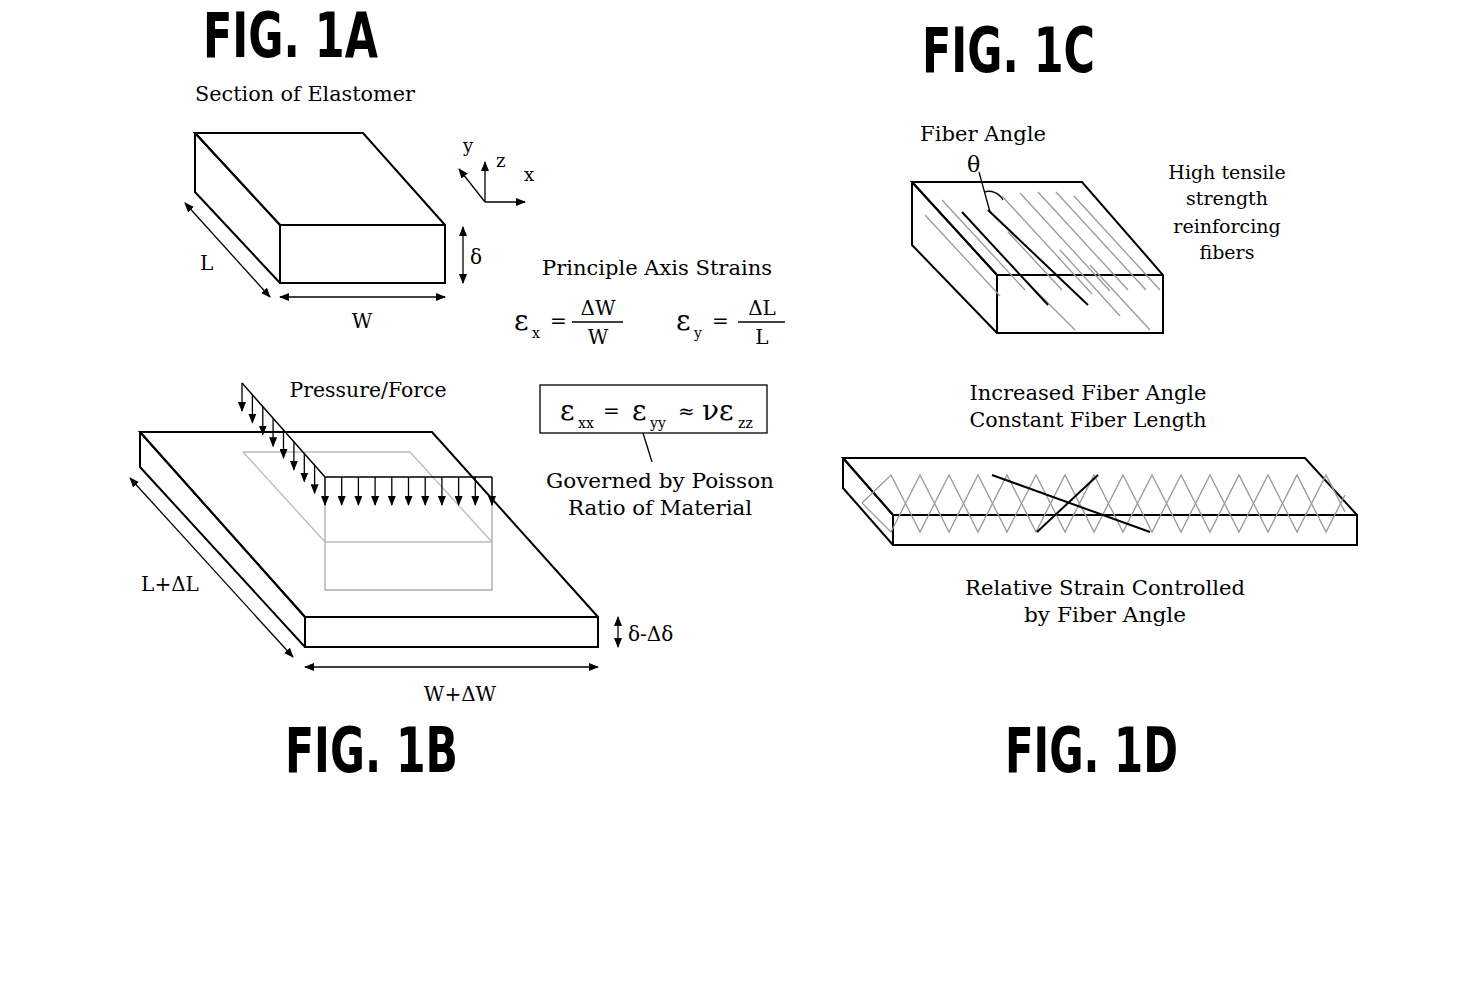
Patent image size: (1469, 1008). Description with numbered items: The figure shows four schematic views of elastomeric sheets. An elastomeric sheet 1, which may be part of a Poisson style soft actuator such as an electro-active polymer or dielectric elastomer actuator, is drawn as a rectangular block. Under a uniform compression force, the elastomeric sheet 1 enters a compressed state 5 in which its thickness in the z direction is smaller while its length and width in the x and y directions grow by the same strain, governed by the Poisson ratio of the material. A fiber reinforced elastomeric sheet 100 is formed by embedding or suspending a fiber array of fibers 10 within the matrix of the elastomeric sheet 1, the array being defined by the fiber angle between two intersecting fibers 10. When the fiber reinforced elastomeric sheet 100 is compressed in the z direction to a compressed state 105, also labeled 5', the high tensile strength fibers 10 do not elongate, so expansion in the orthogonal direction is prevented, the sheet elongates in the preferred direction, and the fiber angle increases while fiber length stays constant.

In FIG. 1A, the elastomeric sheet 1 is at (365, 150).
In FIG. 1C, the elastomeric sheet 1 is at (928, 207).
In FIG. 1B, the compressed state 5 is at (406, 539).
In FIG. 1D, the strained fiber-reinforced elastomer 5' is at (1144, 492).
In FIG. 1C, the fibers 10 is at (1008, 243).
In FIG. 1D, the fibers 10 is at (1017, 483).
In FIG. 1C, the fiber reinforced elastomeric sheet 100 is at (1100, 155).
In FIG. 1D, the compressed state 105 is at (1306, 409).